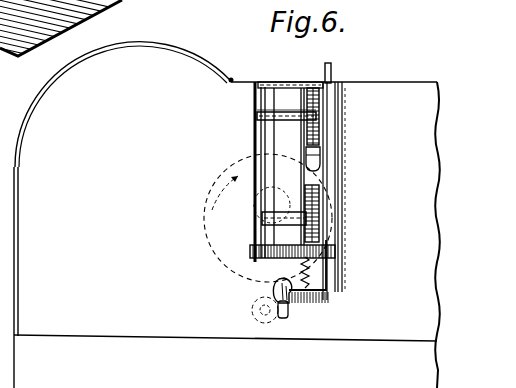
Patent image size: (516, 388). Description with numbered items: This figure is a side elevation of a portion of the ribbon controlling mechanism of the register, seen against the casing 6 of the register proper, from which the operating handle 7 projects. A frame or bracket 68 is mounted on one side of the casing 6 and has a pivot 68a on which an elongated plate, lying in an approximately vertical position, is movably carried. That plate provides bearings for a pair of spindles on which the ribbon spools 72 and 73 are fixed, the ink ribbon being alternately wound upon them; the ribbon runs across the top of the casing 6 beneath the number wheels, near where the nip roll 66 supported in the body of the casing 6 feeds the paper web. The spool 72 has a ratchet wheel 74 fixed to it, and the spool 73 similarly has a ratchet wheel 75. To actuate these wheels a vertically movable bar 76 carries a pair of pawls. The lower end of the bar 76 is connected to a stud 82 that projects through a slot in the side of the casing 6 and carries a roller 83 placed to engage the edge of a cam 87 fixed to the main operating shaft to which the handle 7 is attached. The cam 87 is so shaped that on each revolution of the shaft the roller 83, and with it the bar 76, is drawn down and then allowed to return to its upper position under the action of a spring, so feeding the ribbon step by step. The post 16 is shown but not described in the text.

The casing 6 is at (416, 235).
The operating handle 7 is at (252, 307).
The post 16 is at (332, 68).
The nip roll 66 is at (300, 266).
The frame or bracket 68 is at (333, 145).
The pivot 68a is at (330, 170).
The ribbon spool 72 is at (257, 117).
The ribbon spool 73 is at (290, 212).
The ratchet wheel 74 is at (319, 107).
The ratchet wheel 75 is at (320, 214).
The vertically movable bar 76 is at (327, 271).
The stud 82 is at (291, 302).
The roller 83 is at (287, 319).
The cam 87 is at (222, 260).